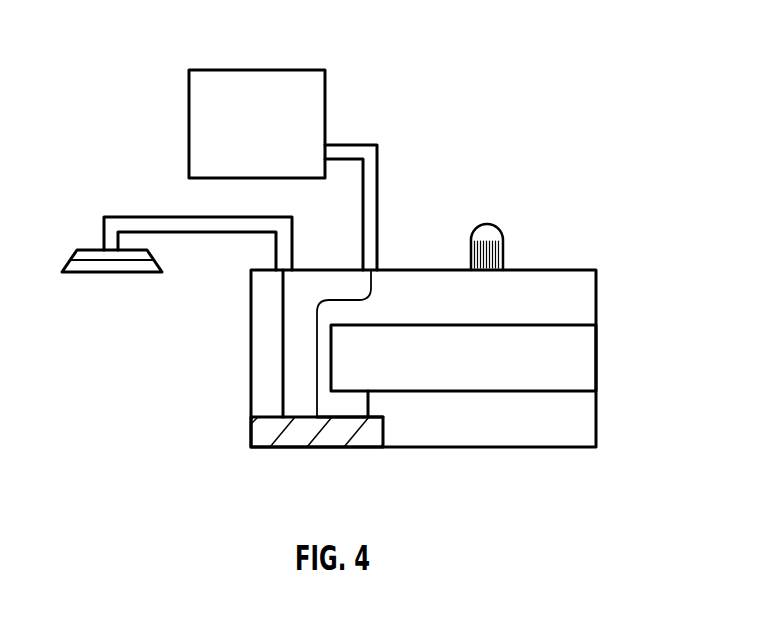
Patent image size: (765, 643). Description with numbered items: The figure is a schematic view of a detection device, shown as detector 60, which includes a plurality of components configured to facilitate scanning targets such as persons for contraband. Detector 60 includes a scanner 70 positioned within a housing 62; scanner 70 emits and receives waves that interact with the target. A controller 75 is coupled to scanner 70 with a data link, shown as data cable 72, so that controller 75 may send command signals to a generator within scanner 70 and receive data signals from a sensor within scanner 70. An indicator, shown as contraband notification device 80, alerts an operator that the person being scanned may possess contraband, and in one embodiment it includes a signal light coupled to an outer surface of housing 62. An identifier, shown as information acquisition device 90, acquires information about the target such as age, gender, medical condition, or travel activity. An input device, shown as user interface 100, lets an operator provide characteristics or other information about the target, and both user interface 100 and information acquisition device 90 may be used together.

The detector 60 is at (605, 71).
The housing 62 is at (525, 267).
The scanner 70 is at (583, 353).
The data cable 72 is at (369, 397).
The controller 75 is at (297, 432).
The contraband notification device 80 is at (487, 216).
The information acquisition device 90 is at (72, 265).
The user interface 100 is at (308, 92).